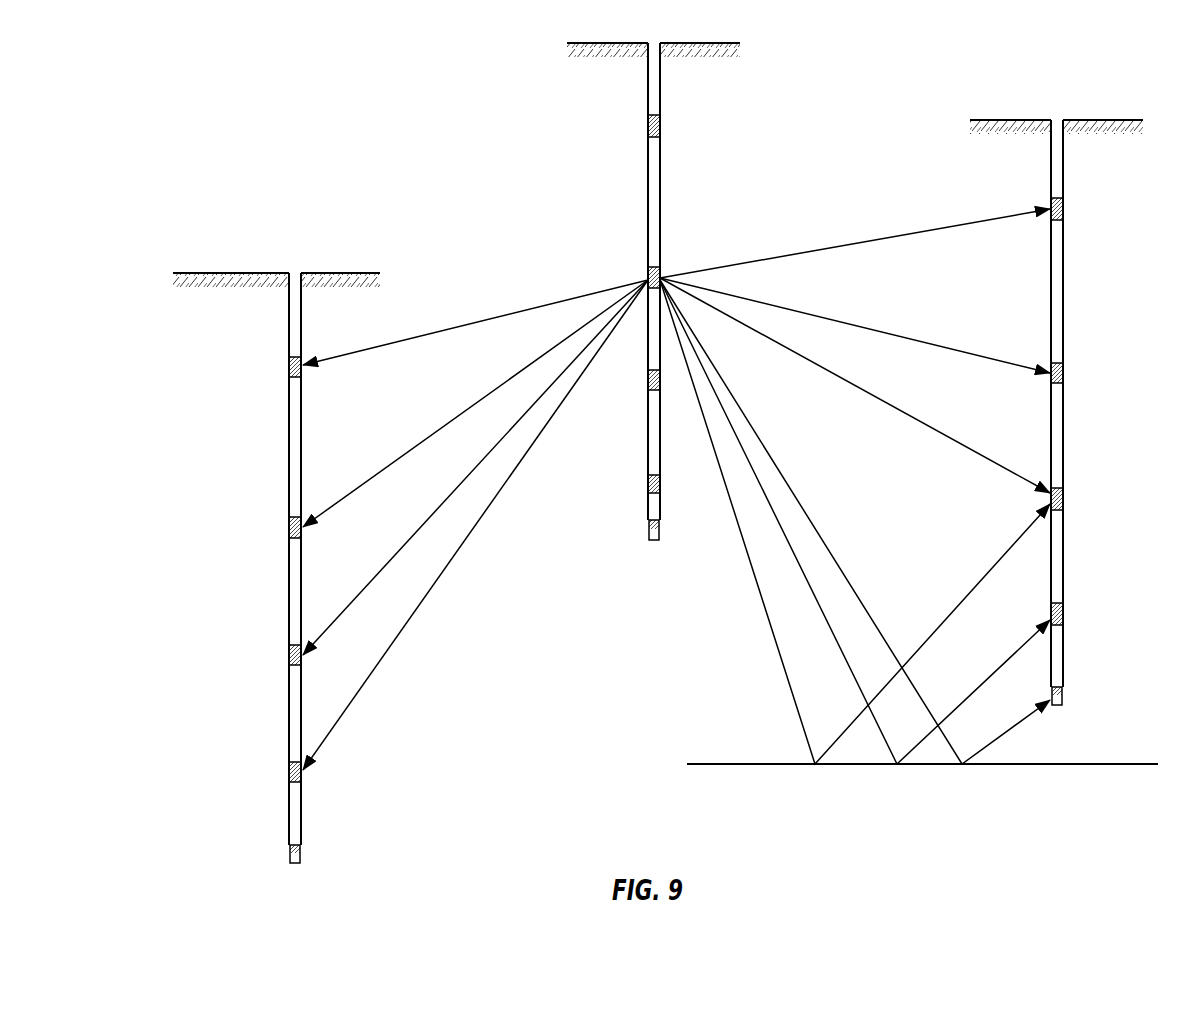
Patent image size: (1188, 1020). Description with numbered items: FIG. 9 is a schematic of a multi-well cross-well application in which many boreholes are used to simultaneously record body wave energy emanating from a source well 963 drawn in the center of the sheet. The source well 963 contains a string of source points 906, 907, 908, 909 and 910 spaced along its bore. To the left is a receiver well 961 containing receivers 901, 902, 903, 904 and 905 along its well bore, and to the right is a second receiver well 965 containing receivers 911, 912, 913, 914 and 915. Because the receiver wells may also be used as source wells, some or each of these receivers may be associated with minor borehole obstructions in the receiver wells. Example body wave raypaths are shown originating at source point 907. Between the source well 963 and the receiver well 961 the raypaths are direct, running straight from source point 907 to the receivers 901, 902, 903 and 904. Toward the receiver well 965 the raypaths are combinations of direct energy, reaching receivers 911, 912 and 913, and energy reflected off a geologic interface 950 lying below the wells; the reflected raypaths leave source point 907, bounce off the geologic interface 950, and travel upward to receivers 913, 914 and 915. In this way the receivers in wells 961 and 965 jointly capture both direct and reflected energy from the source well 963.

The receiver 901 is at (263, 357).
The receiver 902 is at (261, 519).
The receiver 903 is at (261, 645).
The receiver 904 is at (261, 762).
The receiver 905 is at (259, 868).
The source point 906 is at (621, 115).
The source point 907 is at (620, 264).
The source point 908 is at (620, 393).
The source point 909 is at (619, 497).
The source point 910 is at (618, 542).
The receiver 911 is at (1090, 198).
The receiver 912 is at (1090, 362).
The receiver 913 is at (1090, 490).
The receiver 914 is at (1090, 604).
The receiver 915 is at (1091, 710).
The geologic interface 950 is at (916, 747).
The receiver well 961 is at (276, 543).
The source well 963 is at (653, 265).
The receiver well 965 is at (1056, 387).